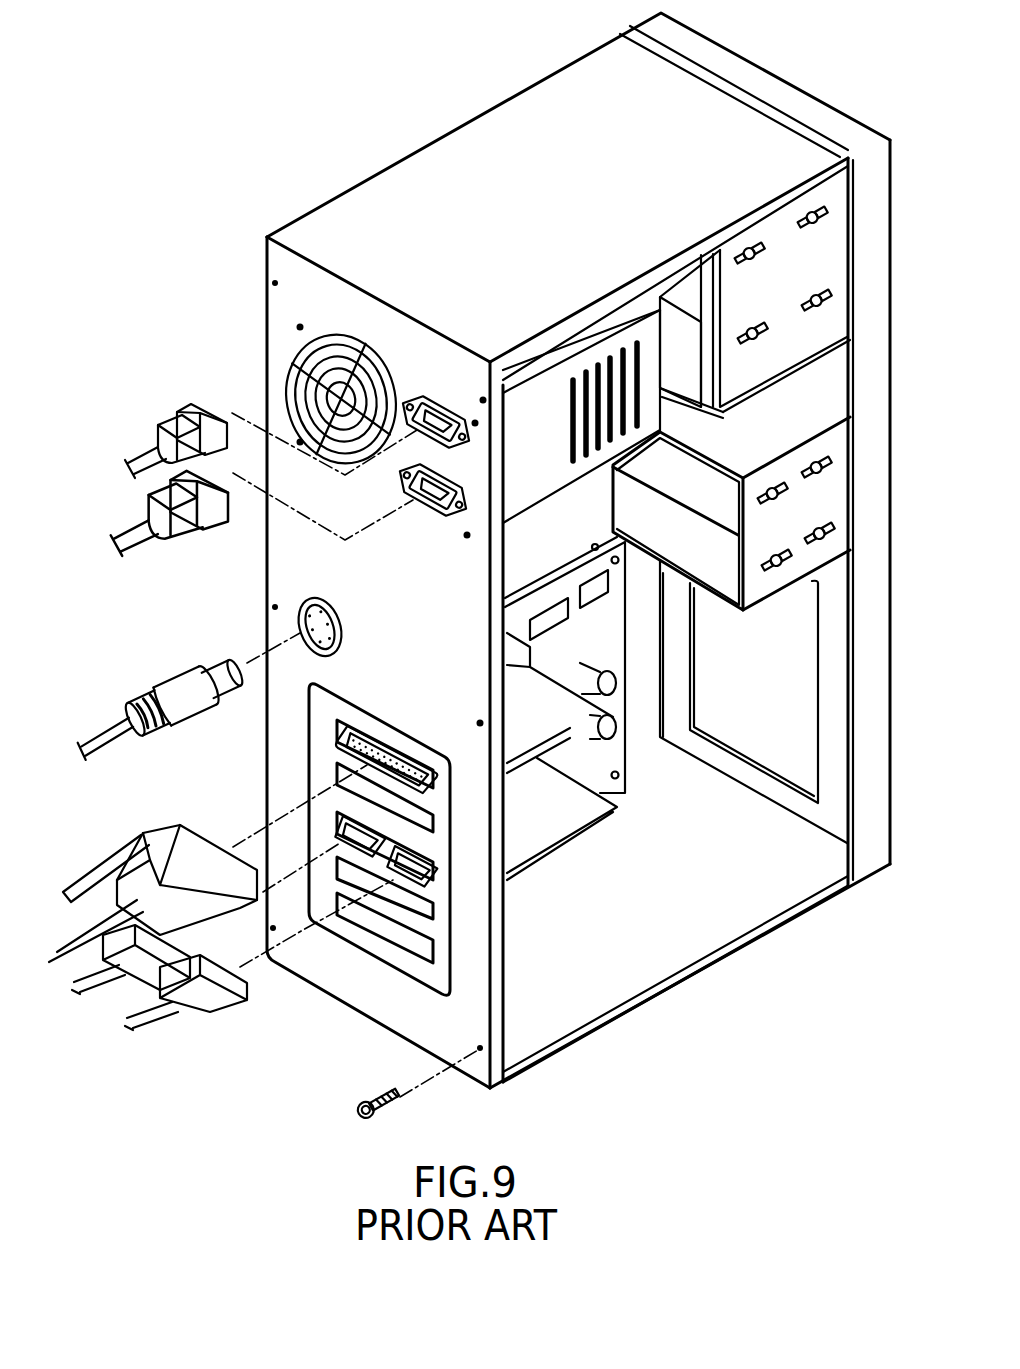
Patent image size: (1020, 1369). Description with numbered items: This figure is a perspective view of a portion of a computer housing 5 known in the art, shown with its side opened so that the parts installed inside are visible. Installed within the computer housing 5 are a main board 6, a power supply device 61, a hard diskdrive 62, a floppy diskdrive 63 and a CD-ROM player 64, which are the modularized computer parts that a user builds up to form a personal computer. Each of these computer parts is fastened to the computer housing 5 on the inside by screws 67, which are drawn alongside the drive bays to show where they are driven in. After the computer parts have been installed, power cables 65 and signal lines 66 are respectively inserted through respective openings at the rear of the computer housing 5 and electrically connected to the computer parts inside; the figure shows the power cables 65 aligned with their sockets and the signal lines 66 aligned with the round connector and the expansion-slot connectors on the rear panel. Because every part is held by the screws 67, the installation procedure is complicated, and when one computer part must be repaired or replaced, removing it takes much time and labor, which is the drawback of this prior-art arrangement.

The computer housing 5 is at (416, 152).
The main board 6 is at (617, 703).
The power supply device 61 is at (548, 405).
The hard diskdrive 62 is at (723, 507).
The floppy diskdrive 63 is at (687, 360).
The CD-ROM player 64 is at (690, 290).
The power cables 65 is at (160, 430).
The signal lines 66 is at (167, 687).
The screws 67 is at (812, 217).